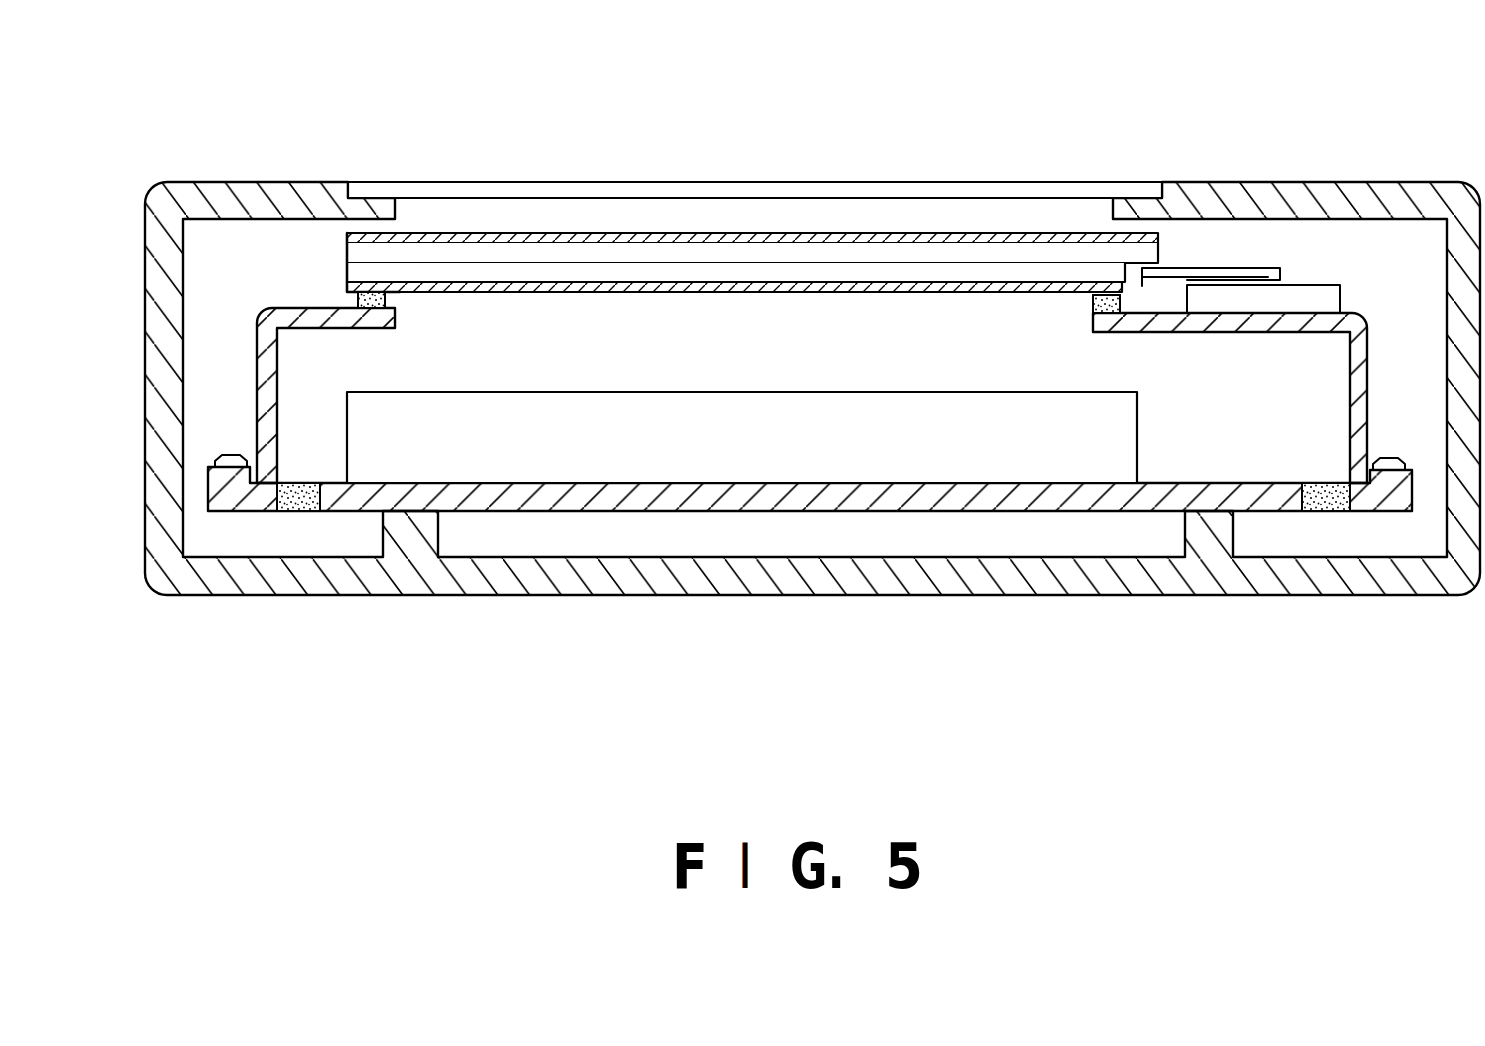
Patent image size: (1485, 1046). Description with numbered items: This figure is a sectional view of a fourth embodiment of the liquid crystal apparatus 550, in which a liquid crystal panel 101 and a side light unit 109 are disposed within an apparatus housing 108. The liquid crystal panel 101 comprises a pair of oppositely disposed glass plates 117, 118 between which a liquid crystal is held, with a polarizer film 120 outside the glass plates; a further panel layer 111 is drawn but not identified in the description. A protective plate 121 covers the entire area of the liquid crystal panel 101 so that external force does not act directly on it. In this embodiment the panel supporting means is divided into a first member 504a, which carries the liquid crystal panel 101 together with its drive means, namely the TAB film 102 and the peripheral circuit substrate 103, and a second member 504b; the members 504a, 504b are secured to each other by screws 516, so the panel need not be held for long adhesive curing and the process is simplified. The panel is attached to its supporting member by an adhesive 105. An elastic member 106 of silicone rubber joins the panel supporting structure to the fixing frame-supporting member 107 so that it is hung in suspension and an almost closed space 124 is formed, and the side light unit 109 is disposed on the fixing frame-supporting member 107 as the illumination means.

The liquid crystal apparatus 550 is at (927, 150).
The first member 504a is at (300, 305).
The second member 504b is at (243, 503).
The adhesive 105 is at (373, 282).
The glass plate 117 is at (505, 258).
The glass plate 118 is at (630, 272).
The upper polarizer 111 is at (729, 230).
The polarizer film 120 is at (840, 282).
The liquid crystal panel 101 is at (750, 202).
The protective plate 121 is at (1132, 193).
The TAB film 102 is at (1228, 268).
The peripheral circuit substrate 103 is at (1313, 295).
The almost closed space 124 is at (1322, 390).
The screws 516 is at (232, 453).
The elastic member 106 is at (297, 505).
The side light unit 109 is at (493, 452).
The fixing frame-supporting member 107 is at (630, 502).
The housing 108 is at (1300, 580).